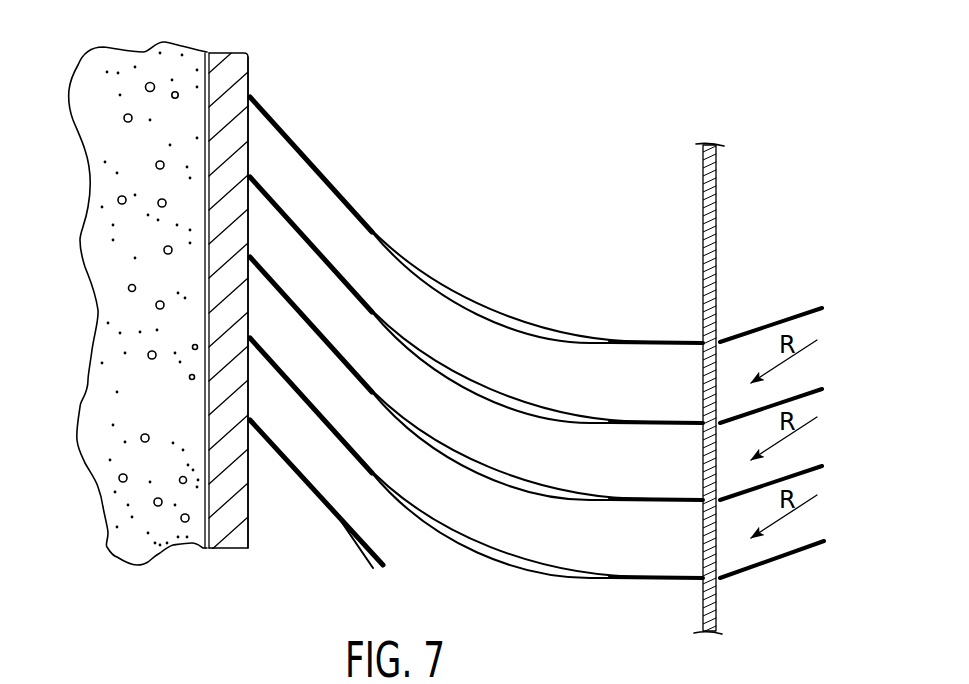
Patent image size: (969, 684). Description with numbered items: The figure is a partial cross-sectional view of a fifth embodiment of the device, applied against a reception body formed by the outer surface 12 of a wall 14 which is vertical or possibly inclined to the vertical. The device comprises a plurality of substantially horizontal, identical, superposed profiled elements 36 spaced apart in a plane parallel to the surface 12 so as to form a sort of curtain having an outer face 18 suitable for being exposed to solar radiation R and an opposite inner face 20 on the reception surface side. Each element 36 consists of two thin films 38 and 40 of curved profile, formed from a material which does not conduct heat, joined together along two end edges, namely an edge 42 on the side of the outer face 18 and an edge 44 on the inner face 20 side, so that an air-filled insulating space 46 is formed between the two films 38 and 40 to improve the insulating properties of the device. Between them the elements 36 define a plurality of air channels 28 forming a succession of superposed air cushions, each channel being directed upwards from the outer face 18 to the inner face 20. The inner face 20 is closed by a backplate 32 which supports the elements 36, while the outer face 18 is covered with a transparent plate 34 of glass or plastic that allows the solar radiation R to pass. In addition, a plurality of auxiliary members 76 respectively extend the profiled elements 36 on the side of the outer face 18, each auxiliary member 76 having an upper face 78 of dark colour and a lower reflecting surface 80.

The outer surface 12 is at (208, 506).
The wall 14 is at (92, 313).
The outer face 18 is at (694, 562).
The inner face 20 is at (243, 403).
The air channels 28 is at (405, 473).
The backplate 32 is at (229, 50).
The transparent plate 34 is at (717, 184).
The elements 36 is at (527, 344).
The thin film 38 is at (488, 300).
The thin film 40 is at (462, 314).
The edge 42 is at (693, 340).
The edge 44 is at (252, 97).
The insulating space 46 is at (498, 326).
The auxiliary members 76 is at (821, 312).
The upper face 78 is at (787, 316).
The lower reflecting surface 80 is at (755, 330).